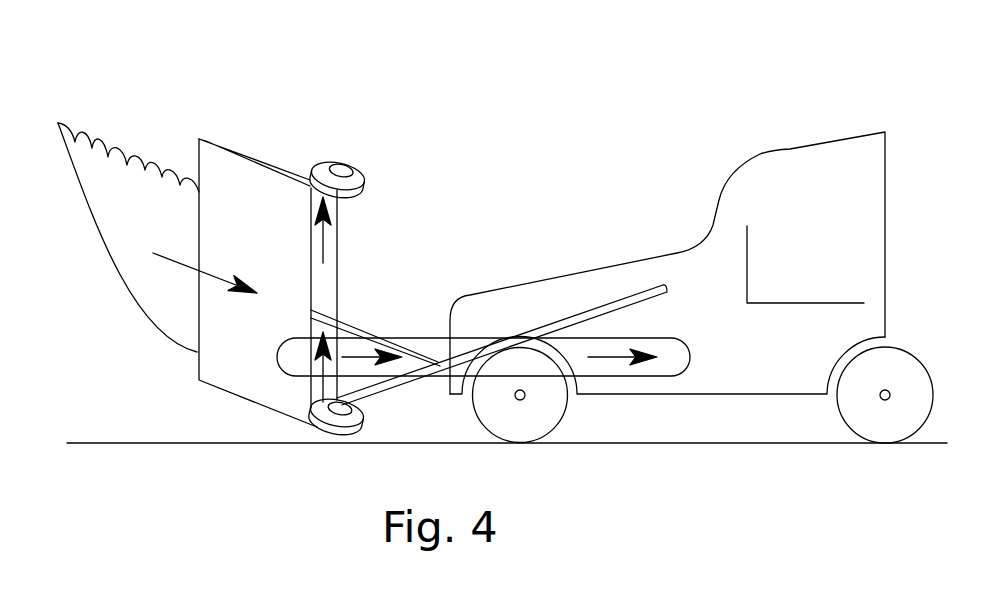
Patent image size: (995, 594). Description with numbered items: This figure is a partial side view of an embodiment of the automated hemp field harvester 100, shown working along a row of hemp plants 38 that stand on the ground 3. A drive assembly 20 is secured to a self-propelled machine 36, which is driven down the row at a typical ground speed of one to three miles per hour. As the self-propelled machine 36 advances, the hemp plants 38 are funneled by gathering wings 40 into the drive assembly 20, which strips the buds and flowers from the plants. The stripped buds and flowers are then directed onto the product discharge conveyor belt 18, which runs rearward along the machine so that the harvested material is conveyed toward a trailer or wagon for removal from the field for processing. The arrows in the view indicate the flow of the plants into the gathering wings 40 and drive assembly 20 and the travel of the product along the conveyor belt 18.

The debris collection system 100 is at (441, 66).
The ground surface 3 is at (162, 443).
The product discharge conveyor belt 18 is at (490, 338).
The drive assembly 20 is at (373, 145).
The self-propelled machine 36 is at (717, 210).
The hemp plant 38 is at (127, 293).
The gathering wing 40 is at (228, 145).